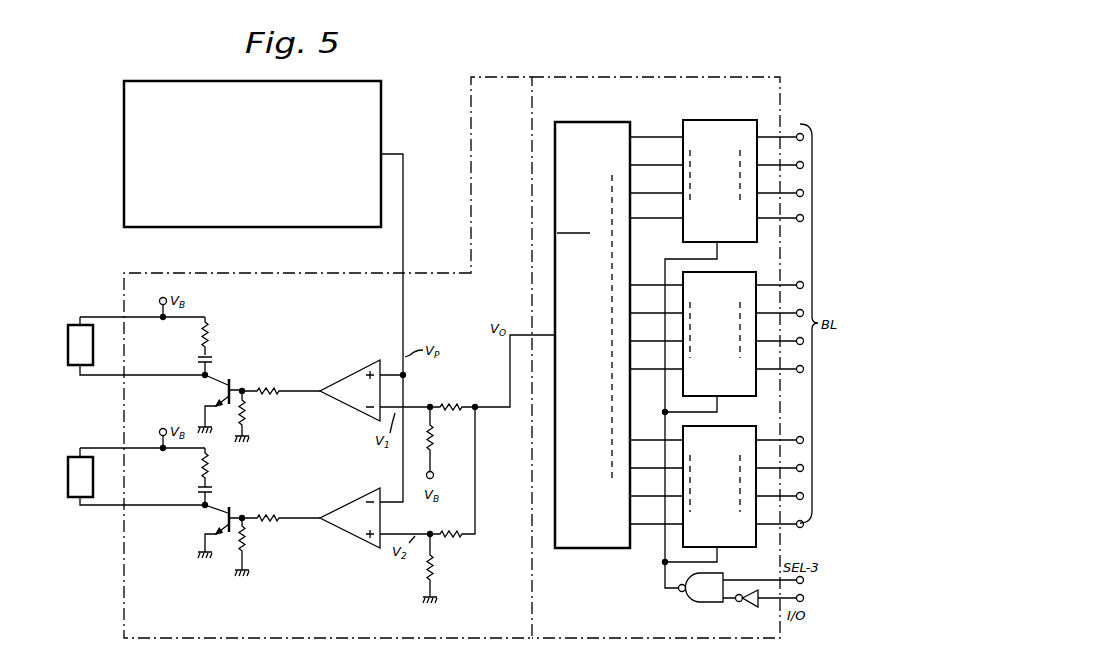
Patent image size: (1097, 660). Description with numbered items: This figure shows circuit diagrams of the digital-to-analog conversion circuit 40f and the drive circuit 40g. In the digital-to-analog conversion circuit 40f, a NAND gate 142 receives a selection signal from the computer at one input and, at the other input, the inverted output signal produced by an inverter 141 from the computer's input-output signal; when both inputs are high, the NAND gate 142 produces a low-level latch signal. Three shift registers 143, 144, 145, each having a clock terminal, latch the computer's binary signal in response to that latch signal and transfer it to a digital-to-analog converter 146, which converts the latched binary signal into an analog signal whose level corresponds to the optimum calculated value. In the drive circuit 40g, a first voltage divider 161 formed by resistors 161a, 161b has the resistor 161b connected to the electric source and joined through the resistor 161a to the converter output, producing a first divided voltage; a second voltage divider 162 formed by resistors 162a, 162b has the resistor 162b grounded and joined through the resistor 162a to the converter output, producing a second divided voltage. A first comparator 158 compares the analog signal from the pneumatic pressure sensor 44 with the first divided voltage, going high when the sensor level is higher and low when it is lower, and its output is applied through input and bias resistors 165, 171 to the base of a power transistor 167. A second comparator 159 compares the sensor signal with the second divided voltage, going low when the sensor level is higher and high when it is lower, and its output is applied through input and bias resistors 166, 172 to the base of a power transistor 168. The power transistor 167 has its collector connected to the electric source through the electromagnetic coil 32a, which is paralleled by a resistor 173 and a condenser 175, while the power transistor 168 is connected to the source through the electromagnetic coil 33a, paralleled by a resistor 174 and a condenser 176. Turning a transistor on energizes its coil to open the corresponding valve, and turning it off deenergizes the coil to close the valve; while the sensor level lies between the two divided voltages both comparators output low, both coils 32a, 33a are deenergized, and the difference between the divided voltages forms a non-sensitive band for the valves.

The pneumatic pressure sensor 44 is at (321, 227).
The drive circuit 40g is at (206, 273).
The digital-to-analog conversion circuit 40f is at (648, 77).
The electromagnetic coil 32a is at (77, 366).
The electromagnetic coil 33a is at (77, 498).
The resistor 173 is at (212, 331).
The resistor 174 is at (213, 463).
The condenser 175 is at (214, 358).
The condenser 176 is at (197, 490).
The power transistor 167 is at (217, 386).
The power transistor 168 is at (218, 516).
The bias resistor 171 is at (250, 410).
The bias resistor 172 is at (251, 548).
The input resistor 165 is at (270, 386).
The input resistor 166 is at (268, 515).
The first comparator 158 is at (367, 360).
The second comparator 159 is at (347, 500).
The first voltage divider 161 is at (473, 420).
The resistor 161a is at (464, 413).
The resistor 161b is at (433, 436).
The second voltage divider 162 is at (432, 505).
The resistor 162a is at (460, 537).
The resistor 162b is at (425, 566).
The digital-to-analog converter 146 is at (592, 335).
The shift register 143 is at (713, 120).
The shift register 144 is at (720, 272).
The shift register 145 is at (720, 426).
The NAND gate 142 is at (687, 602).
The inverter 141 is at (745, 607).